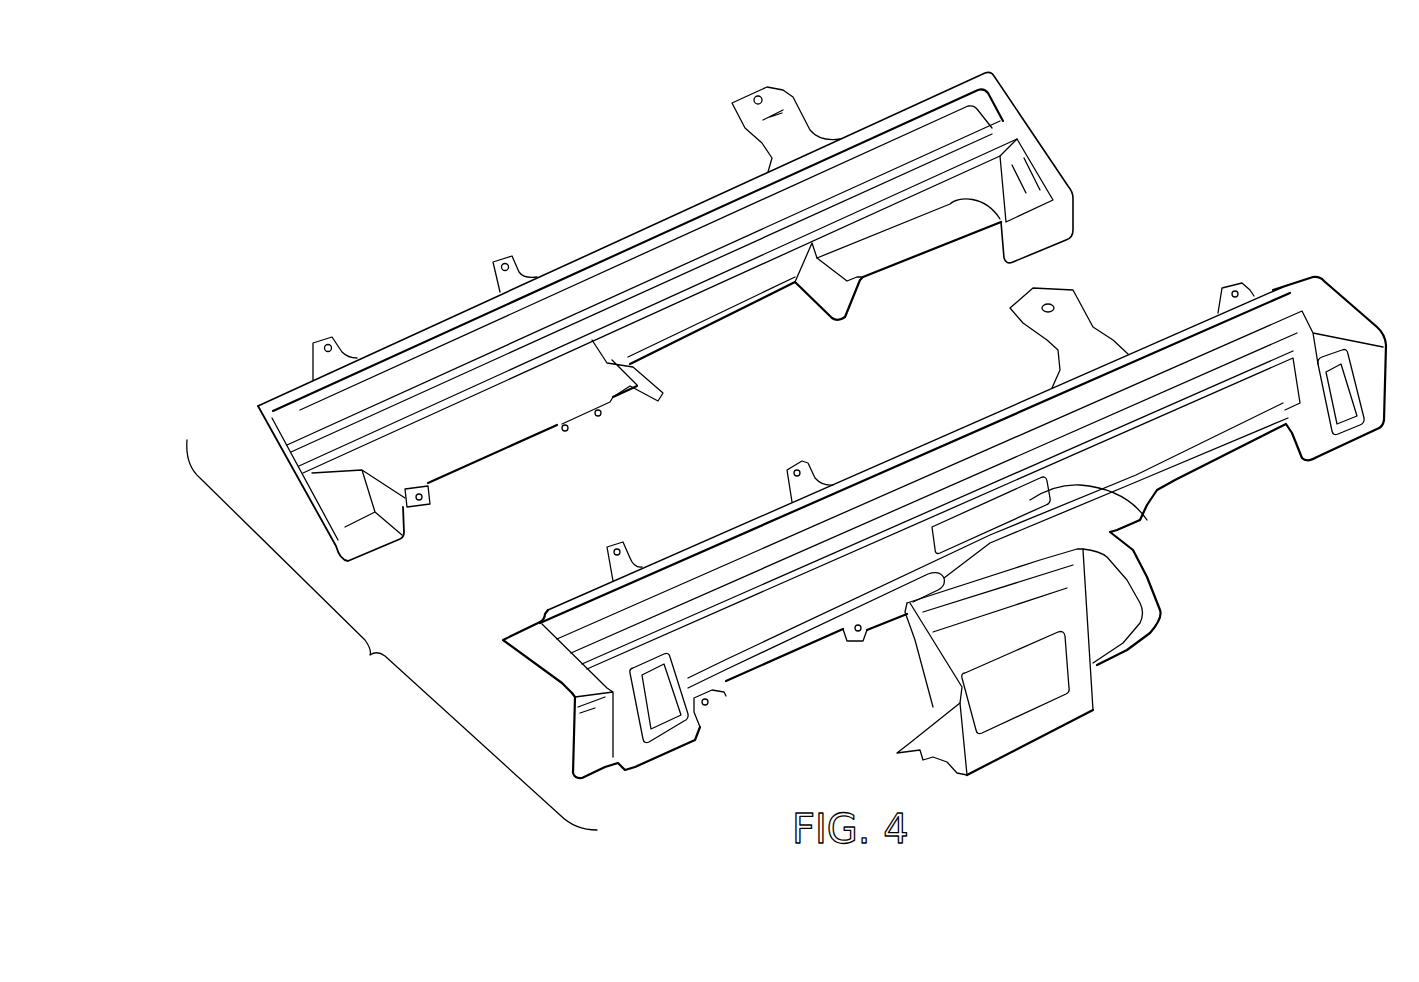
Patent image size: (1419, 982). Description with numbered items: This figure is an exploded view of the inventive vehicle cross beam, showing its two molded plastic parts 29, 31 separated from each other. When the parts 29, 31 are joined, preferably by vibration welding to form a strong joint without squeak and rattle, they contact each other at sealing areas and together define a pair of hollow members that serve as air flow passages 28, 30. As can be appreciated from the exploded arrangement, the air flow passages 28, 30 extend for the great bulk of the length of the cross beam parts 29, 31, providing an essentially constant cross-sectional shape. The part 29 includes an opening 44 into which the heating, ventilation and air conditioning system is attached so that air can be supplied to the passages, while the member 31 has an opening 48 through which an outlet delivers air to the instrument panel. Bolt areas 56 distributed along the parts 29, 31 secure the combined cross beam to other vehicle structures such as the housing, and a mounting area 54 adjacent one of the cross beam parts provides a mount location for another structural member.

The air flow passage 28 is at (398, 380).
The molded plastic part 29 is at (305, 498).
The air flow passage 30 is at (440, 425).
The molded plastic part 31 is at (578, 690).
The opening 44 is at (633, 367).
The opening 48 is at (1147, 513).
The mounting area 54 is at (938, 668).
The bolt areas 56 is at (752, 98).